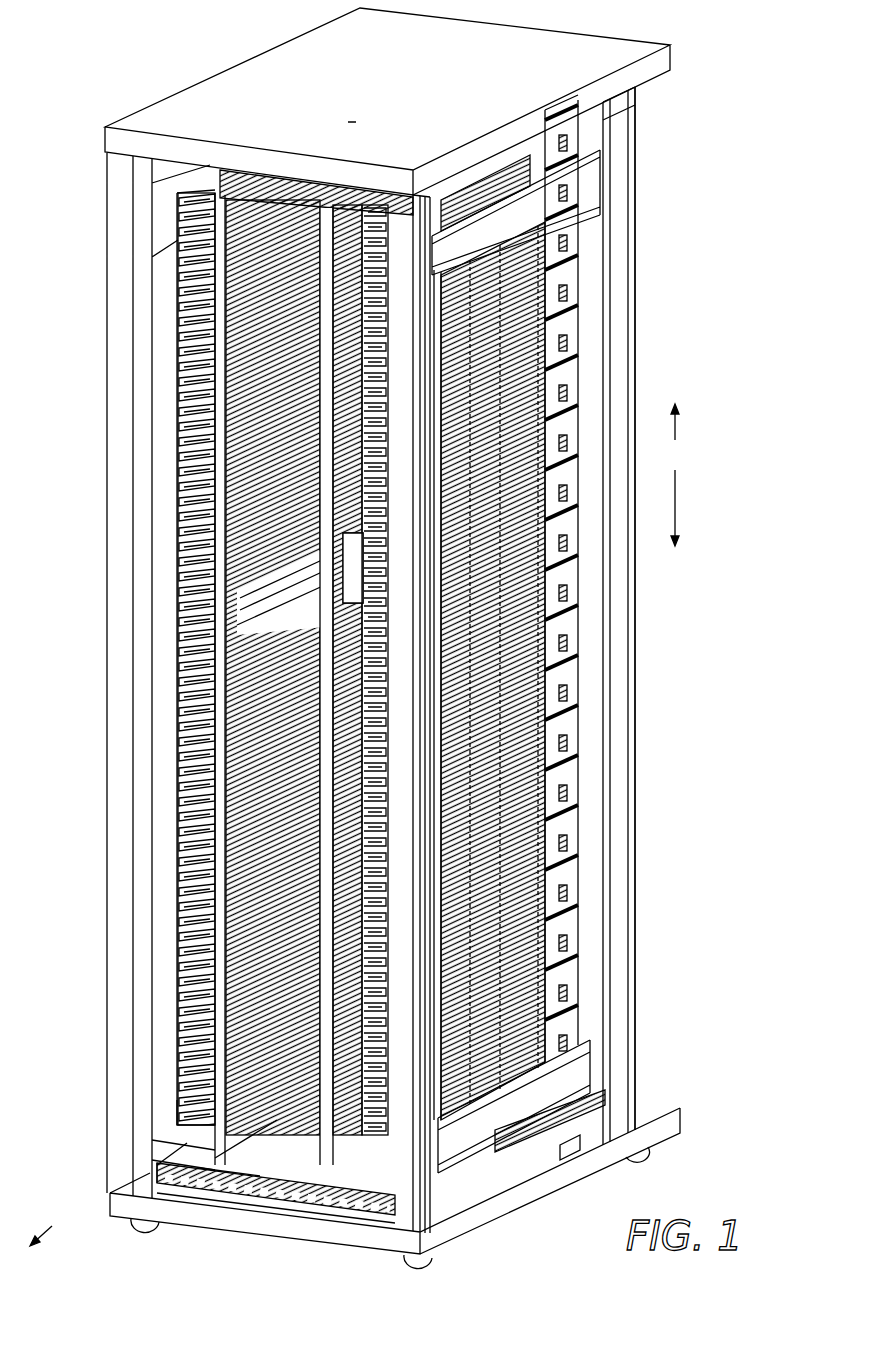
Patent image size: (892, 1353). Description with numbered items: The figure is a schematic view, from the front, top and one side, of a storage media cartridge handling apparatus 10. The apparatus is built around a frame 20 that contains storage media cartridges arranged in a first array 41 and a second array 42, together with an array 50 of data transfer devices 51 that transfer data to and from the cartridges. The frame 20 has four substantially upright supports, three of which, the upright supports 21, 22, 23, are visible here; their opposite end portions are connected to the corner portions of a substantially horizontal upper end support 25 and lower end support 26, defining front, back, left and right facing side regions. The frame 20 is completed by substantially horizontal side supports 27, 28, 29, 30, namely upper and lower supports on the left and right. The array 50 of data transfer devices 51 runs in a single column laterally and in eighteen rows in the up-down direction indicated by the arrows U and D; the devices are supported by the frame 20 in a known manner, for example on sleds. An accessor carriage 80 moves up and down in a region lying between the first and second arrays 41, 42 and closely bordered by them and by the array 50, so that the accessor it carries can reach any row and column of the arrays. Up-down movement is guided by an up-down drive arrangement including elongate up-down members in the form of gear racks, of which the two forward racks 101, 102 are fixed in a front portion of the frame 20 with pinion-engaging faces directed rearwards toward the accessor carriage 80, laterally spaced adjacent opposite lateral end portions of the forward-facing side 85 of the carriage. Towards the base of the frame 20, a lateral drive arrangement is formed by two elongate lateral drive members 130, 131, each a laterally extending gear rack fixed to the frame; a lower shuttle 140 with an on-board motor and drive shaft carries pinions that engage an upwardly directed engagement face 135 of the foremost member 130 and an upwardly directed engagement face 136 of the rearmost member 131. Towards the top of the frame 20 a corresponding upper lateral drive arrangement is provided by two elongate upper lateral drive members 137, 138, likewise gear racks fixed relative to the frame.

The storage media cartridge handling apparatus 10 is at (717, 303).
The frame 20 is at (640, 908).
The upright support 21 is at (397, 187).
The upright support 22 is at (120, 296).
The upright support 23 is at (623, 789).
The upper end support 25 is at (560, 64).
The lower end support 26 is at (478, 1224).
The upper left side support 27 is at (133, 657).
The lower left side support 28 is at (172, 1106).
The upper right side support 29 is at (566, 193).
The lower right side support 30 is at (573, 1066).
The first array 41 is at (174, 362).
The second array 42 is at (549, 362).
The array of data transfer devices 50 is at (578, 290).
The data transfer device 51 is at (580, 986).
The accessor carriage 80 is at (318, 594).
The forward-facing side 85 is at (245, 615).
The up-down rack 101 is at (322, 1197).
The up-down rack 102 is at (155, 1151).
The elongate lateral drive member 130 is at (276, 1197).
The elongate lateral drive member 131 is at (578, 1152).
The engagement face 135 is at (178, 1190).
The engagement face 136 is at (600, 1117).
The elongate upper lateral drive member 137 is at (430, 187).
The elongate upper lateral drive member 138 is at (605, 120).
The lower shuttle 140 is at (228, 1195).